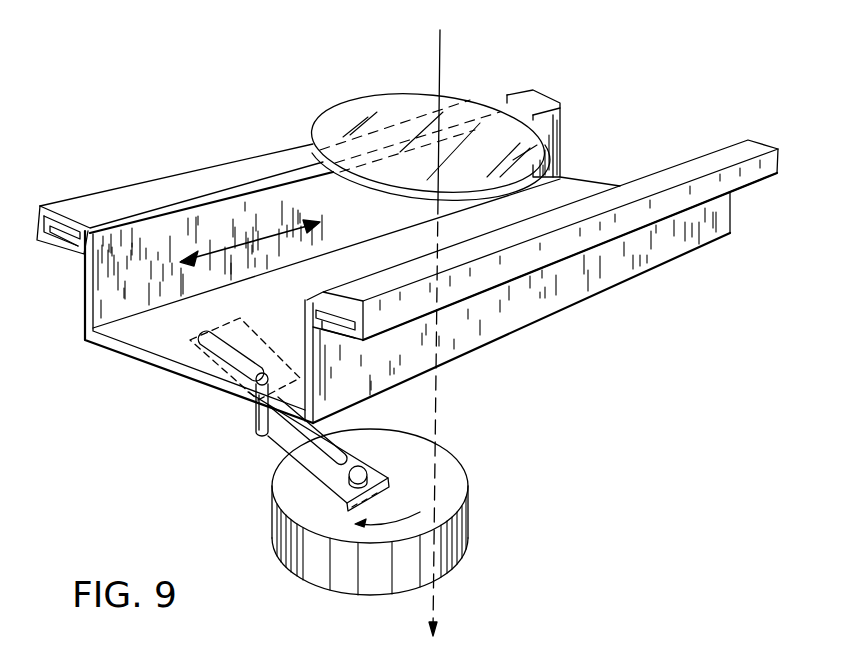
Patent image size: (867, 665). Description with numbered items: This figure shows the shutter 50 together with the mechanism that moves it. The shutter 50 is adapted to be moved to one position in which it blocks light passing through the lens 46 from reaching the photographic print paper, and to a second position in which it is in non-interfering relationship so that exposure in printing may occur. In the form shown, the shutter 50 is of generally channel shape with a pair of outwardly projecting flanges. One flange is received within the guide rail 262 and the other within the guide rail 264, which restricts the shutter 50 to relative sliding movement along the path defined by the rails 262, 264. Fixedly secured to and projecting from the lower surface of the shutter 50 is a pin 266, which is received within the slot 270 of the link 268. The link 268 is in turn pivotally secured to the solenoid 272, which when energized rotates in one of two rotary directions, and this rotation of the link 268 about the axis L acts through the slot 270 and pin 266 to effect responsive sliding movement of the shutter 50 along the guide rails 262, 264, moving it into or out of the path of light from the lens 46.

The lens 46 is at (343, 110).
The shutter 50 is at (585, 173).
The guide rail 262 is at (753, 149).
The guide rail 264 is at (536, 102).
The pin 266 is at (255, 423).
The link 268 is at (343, 427).
The slot 270 is at (293, 443).
The solenoid 272 is at (327, 574).
The axis of rotation L is at (441, 408).